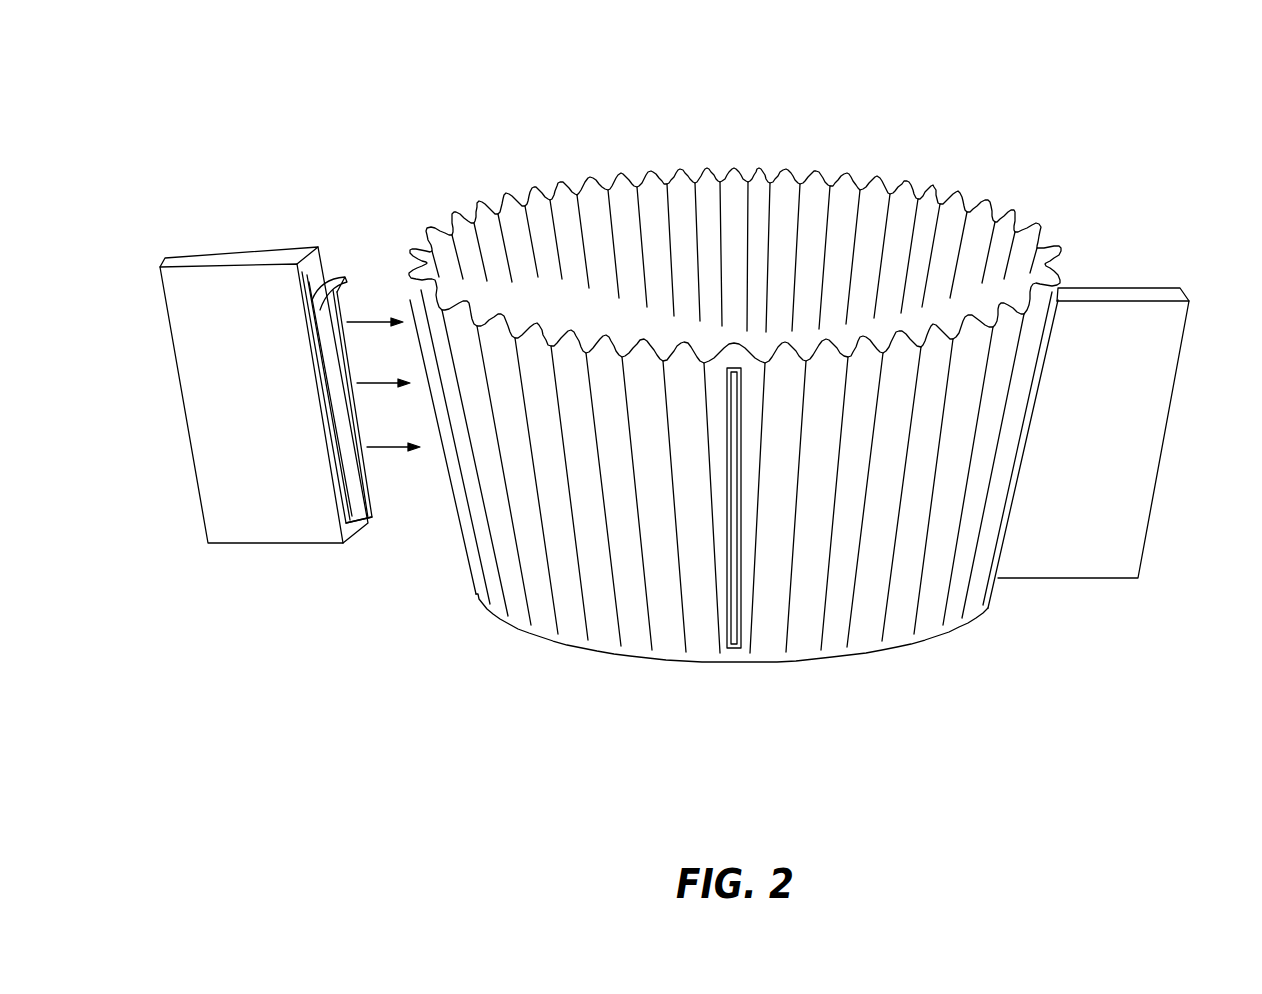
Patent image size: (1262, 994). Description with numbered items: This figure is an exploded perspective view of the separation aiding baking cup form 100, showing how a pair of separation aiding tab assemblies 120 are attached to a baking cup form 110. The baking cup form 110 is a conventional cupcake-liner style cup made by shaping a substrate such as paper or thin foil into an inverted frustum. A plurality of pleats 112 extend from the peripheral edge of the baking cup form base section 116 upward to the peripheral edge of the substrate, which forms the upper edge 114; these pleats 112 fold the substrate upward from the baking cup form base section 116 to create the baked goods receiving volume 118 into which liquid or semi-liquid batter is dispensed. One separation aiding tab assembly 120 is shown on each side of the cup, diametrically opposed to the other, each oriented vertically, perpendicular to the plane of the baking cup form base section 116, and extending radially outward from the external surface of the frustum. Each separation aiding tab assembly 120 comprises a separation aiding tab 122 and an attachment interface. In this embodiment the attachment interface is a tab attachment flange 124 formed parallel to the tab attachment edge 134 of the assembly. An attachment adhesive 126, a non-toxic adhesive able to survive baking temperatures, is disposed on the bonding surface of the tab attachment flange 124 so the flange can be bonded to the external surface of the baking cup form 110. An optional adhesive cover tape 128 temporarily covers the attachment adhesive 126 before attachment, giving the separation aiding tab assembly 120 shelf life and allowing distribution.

The separation aiding baking cup form 100 is at (364, 84).
The baking cup form 110 is at (735, 413).
The pleats 112 is at (925, 578).
The upper edge 114 is at (735, 166).
The baking cup form base section 116 is at (727, 663).
The baked goods receiving volume 118 is at (900, 280).
The separation aiding tab assembly 120 is at (741, 590).
The separation aiding tab 122 is at (268, 497).
The tab attachment flange 124 is at (373, 411).
The attachment adhesive 126 is at (337, 272).
The adhesive cover tape 128 is at (352, 458).
The tab attachment edge 134 is at (347, 556).